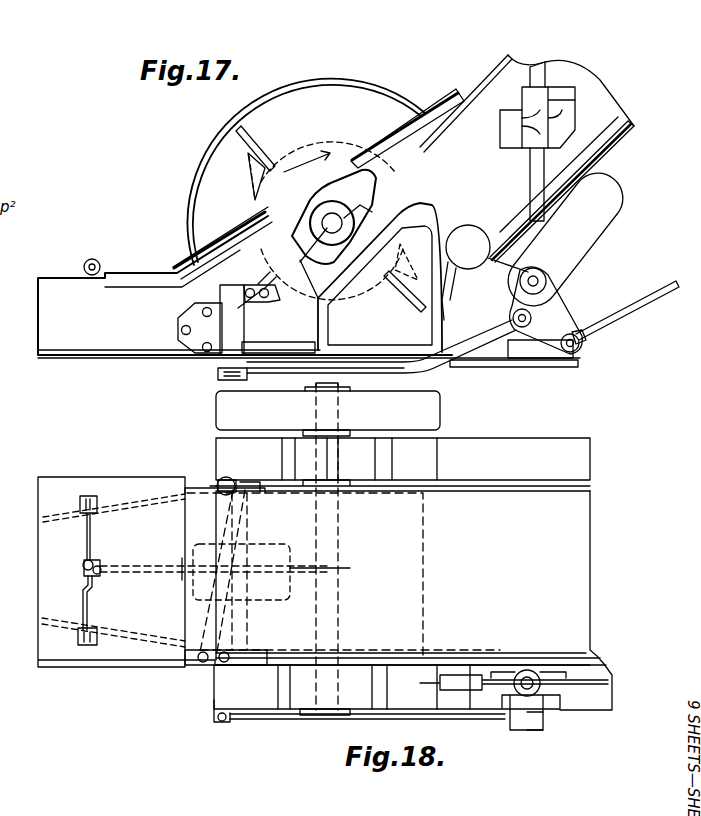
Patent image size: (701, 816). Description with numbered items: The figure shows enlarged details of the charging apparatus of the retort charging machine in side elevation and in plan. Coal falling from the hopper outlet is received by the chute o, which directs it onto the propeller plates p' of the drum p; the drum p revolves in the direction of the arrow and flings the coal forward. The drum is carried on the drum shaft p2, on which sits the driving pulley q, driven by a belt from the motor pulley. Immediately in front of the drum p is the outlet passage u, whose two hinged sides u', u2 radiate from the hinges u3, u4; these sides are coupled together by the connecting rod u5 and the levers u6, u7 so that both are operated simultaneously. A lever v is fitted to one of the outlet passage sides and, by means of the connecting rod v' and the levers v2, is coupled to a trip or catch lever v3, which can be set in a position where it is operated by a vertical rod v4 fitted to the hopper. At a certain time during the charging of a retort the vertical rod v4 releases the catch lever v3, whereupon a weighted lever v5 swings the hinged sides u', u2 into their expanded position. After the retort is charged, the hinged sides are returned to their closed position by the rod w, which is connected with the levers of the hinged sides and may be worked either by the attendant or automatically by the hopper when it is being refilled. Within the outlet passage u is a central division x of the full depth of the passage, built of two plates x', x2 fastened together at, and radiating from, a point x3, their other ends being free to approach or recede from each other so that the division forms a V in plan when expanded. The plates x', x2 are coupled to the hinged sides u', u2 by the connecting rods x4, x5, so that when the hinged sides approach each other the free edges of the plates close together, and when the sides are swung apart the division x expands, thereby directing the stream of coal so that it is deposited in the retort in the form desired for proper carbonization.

In FIG. 17, the drum p is at (306, 189).
In FIG. 17, the propeller plates p' is at (304, 221).
In FIG. 17, the drum shaft p2 is at (322, 232).
In FIG. 18, the drum shaft p2 is at (338, 516).
In FIG. 17, the outlet passage u is at (309, 223).
In FIG. 18, the outlet passage u is at (111, 572).
In FIG. 18, the hinged side u' is at (113, 629).
In FIG. 18, the hinged side u2 is at (124, 506).
In FIG. 18, the hinge u3 is at (212, 668).
In FIG. 18, the hinge u4 is at (216, 480).
In FIG. 18, the connecting rod u5 is at (343, 576).
In FIG. 18, the lever u6 is at (222, 654).
In FIG. 18, the lever u7 is at (240, 483).
In FIG. 17, the lever v is at (219, 373).
In FIG. 18, the lever v is at (203, 711).
In FIG. 17, the connecting rod v' is at (381, 358).
In FIG. 18, the connecting rod v' is at (367, 730).
In FIG. 17, the levers v2 is at (520, 299).
In FIG. 18, the levers v2 is at (538, 722).
In FIG. 17, the trip or catch lever v3 is at (565, 239).
In FIG. 18, the trip or catch lever v3 is at (526, 725).
In FIG. 17, the vertical rod v4 is at (530, 170).
In FIG. 18, the vertical rod v4 is at (528, 672).
In FIG. 17, the weighted lever v5 is at (485, 272).
In FIG. 18, the weighted lever v5 is at (498, 684).
In FIG. 17, the rod w is at (628, 316).
In FIG. 17, the chute o is at (586, 96).
In FIG. 18, the chute o is at (414, 574).
In FIG. 18, the driving pulley q is at (328, 409).
In FIG. 18, the central division x is at (76, 569).
In FIG. 18, the plate x' is at (215, 571).
In FIG. 18, the plate x2 is at (160, 576).
In FIG. 18, the point x3 is at (328, 573).
In FIG. 18, the connecting rod x4 is at (85, 545).
In FIG. 18, the connecting rod x5 is at (80, 600).